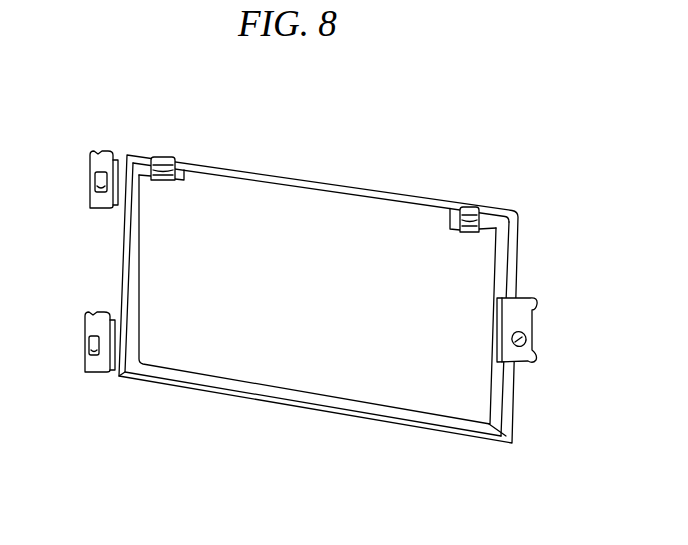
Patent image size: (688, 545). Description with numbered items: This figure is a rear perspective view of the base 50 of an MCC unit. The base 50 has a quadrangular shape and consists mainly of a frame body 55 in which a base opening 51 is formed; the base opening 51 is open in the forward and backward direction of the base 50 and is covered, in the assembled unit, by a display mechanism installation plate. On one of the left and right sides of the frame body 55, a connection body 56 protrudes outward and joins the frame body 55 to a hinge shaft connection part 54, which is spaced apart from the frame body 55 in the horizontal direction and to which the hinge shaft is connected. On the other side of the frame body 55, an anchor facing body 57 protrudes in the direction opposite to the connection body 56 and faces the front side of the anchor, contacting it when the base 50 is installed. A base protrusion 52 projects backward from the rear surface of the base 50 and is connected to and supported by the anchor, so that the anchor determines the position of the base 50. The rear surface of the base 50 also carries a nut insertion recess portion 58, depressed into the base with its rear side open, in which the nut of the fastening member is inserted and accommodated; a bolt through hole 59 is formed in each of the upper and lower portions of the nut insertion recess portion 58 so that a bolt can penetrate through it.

The base 50 is at (526, 200).
The base opening 51 is at (207, 360).
The base protrusion 52 is at (534, 346).
The hinge shaft connection part 54 is at (95, 203).
The frame body 55 is at (236, 170).
The connection body 56 is at (116, 166).
The anchor facing body 57 is at (523, 321).
The nut insertion recess portion 58 is at (165, 158).
The bolt through hole 59 is at (157, 160).